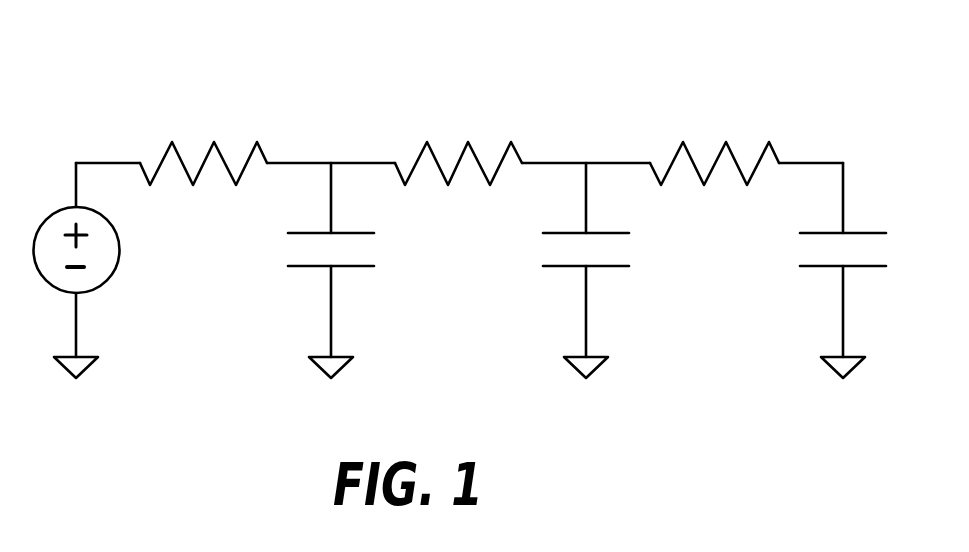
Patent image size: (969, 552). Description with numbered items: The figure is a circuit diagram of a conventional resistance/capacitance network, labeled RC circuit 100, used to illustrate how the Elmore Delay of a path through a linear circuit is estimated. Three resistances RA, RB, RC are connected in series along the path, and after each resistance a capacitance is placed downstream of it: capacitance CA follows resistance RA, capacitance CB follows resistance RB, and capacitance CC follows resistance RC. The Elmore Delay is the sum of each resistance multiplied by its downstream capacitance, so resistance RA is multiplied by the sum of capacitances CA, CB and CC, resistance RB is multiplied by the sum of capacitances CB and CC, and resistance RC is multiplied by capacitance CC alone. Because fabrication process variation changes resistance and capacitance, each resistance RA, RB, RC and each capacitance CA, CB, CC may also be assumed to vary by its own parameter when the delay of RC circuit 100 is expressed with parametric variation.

The RC circuit 100 is at (548, 52).
The resistance RA is at (203, 194).
The resistance RB is at (458, 194).
The resistance RC is at (714, 194).
The capacitance CA is at (336, 270).
The capacitance CB is at (592, 270).
The capacitance CC is at (849, 270).